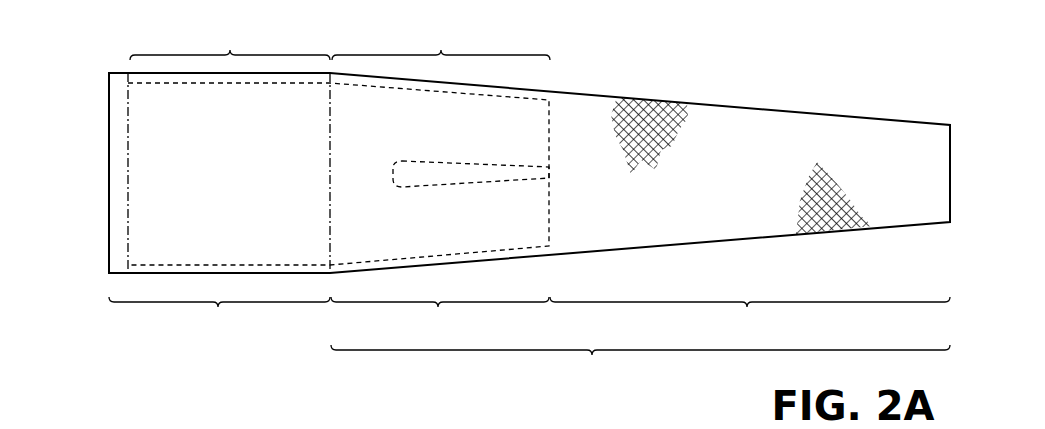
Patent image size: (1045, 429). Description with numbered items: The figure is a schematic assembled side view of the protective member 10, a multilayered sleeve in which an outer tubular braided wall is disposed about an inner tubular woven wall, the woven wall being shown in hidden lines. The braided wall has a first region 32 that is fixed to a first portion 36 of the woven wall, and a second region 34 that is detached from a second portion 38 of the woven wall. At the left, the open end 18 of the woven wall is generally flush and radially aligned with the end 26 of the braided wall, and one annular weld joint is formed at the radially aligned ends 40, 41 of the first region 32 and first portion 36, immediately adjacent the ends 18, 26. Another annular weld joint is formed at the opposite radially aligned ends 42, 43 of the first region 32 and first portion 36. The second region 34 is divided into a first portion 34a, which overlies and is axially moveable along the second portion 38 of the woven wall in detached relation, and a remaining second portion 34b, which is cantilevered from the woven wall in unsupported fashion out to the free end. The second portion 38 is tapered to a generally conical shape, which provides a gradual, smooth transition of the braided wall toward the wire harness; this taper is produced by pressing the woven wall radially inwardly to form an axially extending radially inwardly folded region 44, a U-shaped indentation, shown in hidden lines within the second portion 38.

The protective member 10 is at (748, 62).
The open end of the woven wall 18 is at (93, 151).
The end of the first region 40 is at (108, 88).
The end of the braided wall 26 is at (101, 207).
The end of the first portion 41 is at (128, 231).
The opposite end of the first region 42 is at (391, 173).
The opposite end of the first portion 43 is at (331, 152).
The radially inwardly folded region 44 is at (549, 172).
The first region 32 is at (219, 317).
The second region 34 is at (640, 363).
The first portion of the second region 34a is at (440, 314).
The second portion of the second region 34b is at (750, 314).
The first portion of the woven wall 36 is at (230, 43).
The second portion of the woven wall 38 is at (441, 43).